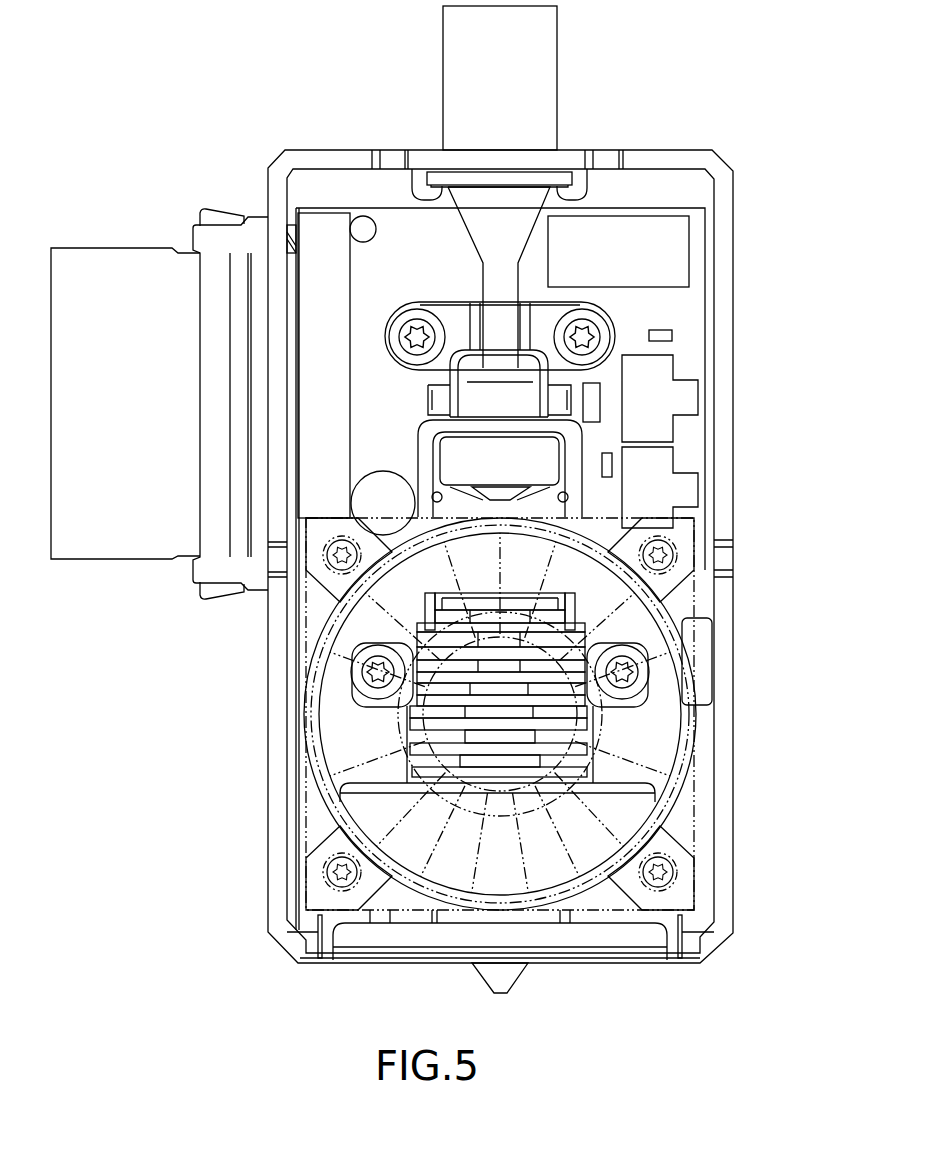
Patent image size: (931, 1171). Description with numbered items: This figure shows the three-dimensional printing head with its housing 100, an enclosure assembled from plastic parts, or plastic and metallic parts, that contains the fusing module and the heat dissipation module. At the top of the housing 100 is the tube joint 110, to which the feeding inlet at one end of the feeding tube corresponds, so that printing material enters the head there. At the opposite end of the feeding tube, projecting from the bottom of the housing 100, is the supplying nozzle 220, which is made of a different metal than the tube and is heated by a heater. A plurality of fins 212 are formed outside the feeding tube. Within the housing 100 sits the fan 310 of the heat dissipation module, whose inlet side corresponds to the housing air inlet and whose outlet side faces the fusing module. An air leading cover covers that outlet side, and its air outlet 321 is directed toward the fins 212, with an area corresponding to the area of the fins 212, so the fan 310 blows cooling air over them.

The housing 100 is at (670, 150).
The tube joint 110 is at (547, 69).
The fins 212 is at (608, 695).
The supplying nozzle 220 is at (505, 975).
The fan 310 is at (700, 853).
The air outlet 321 is at (660, 783).